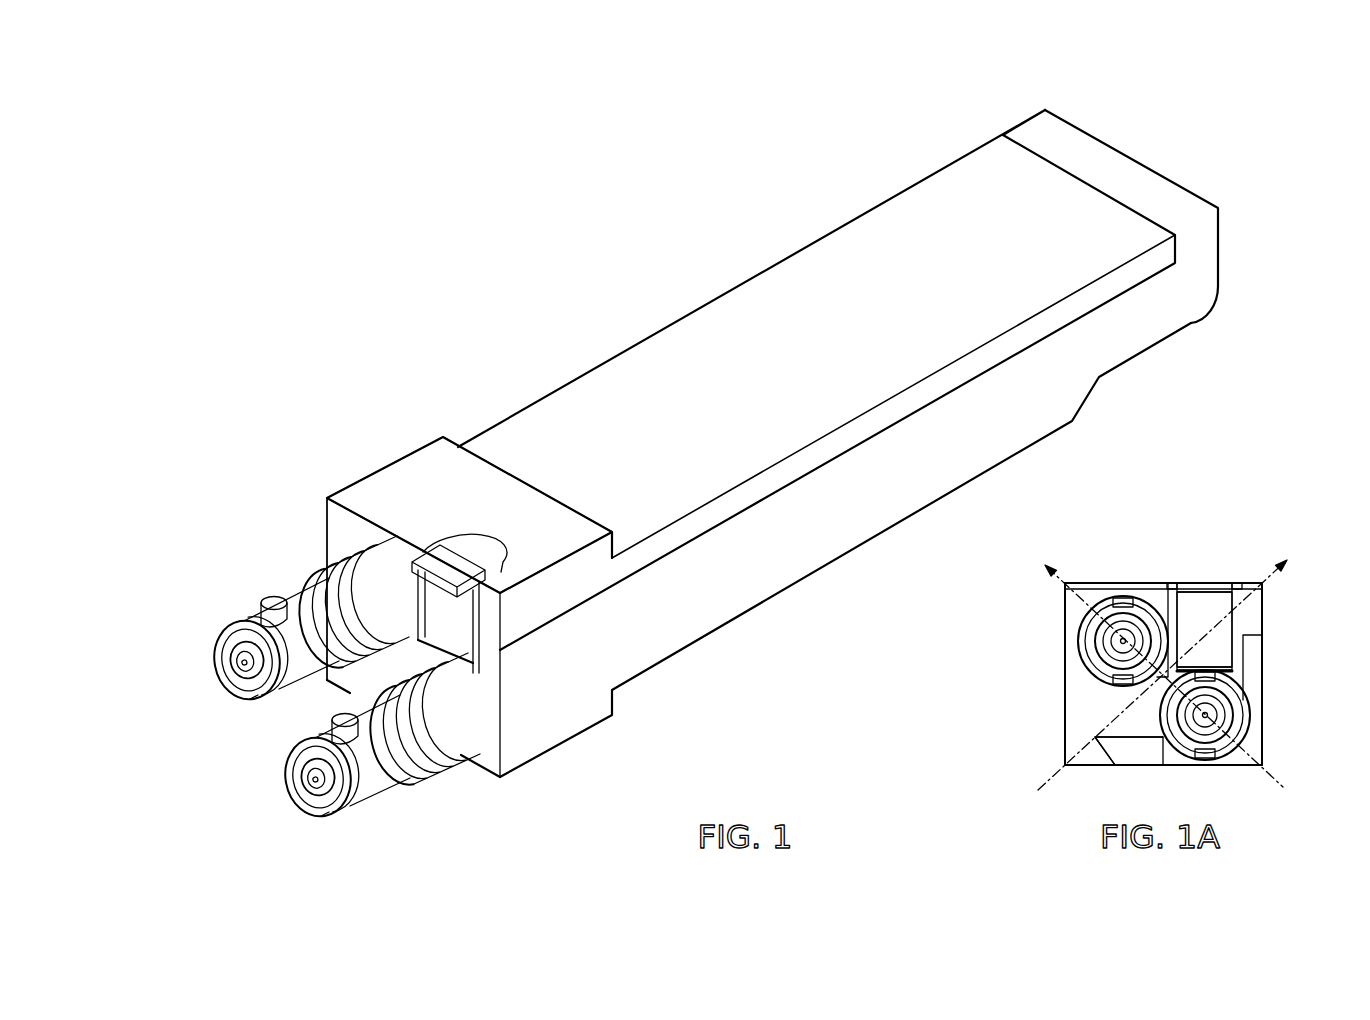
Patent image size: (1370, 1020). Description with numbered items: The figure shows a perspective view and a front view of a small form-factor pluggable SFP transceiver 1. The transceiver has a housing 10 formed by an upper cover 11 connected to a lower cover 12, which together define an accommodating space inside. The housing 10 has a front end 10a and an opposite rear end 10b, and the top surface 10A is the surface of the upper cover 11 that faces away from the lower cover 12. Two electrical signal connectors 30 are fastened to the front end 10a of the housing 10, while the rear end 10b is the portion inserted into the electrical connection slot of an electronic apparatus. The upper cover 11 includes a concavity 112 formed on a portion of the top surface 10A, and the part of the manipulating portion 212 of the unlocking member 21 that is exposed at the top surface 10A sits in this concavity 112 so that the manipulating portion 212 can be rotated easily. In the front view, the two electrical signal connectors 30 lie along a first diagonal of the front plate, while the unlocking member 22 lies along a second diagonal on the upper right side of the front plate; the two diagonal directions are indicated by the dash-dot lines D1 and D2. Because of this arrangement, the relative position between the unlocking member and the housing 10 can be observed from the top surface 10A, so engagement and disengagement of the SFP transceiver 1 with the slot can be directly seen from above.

In FIG. 1, the SFP transceiver 1 is at (350, 173).
In FIG. 1, the housing 10 is at (746, 732).
In FIG. 1A, the housing 10 is at (997, 595).
In FIG. 1, the front end 10a is at (256, 748).
In FIG. 1, the rear end 10b is at (1188, 175).
In FIG. 1, the top surface 10A is at (507, 505).
In FIG. 1, the upper cover 11 is at (605, 572).
In FIG. 1A, the upper cover 11 is at (1077, 610).
In FIG. 1, the lower cover 12 is at (633, 648).
In FIG. 1A, the lower cover 12 is at (1082, 693).
In FIG. 1, the concavity 112 is at (470, 553).
In FIG. 1, the unlocking member 21 is at (462, 626).
In FIG. 1A, the unlocking member 21 is at (1214, 610).
In FIG. 1, the manipulating portion 212 is at (437, 562).
In FIG. 1A, the manipulating portion 212 is at (1203, 590).
In FIG. 1A, the interlock member 22 is at (1137, 755).
In FIG. 1, the electrical signal connector 30 is at (311, 587).
In FIG. 1A, the electrical signal connector 30 is at (1102, 627).
In FIG. 1A, the first direction D1 is at (1157, 664).
In FIG. 1A, the second direction D2 is at (1173, 665).